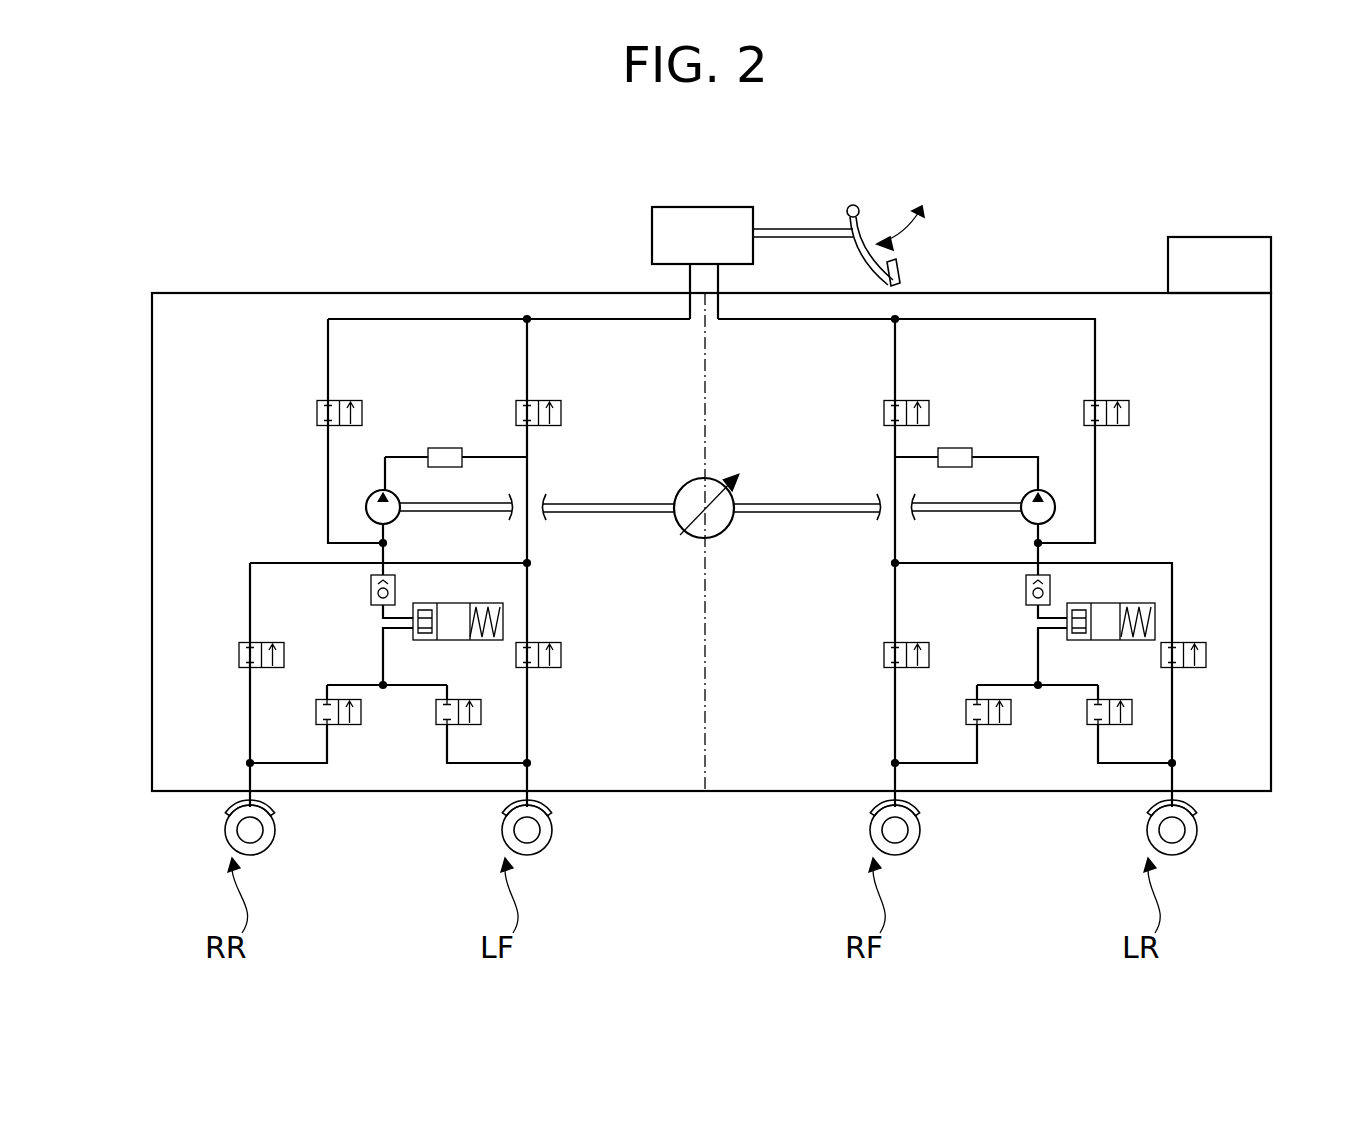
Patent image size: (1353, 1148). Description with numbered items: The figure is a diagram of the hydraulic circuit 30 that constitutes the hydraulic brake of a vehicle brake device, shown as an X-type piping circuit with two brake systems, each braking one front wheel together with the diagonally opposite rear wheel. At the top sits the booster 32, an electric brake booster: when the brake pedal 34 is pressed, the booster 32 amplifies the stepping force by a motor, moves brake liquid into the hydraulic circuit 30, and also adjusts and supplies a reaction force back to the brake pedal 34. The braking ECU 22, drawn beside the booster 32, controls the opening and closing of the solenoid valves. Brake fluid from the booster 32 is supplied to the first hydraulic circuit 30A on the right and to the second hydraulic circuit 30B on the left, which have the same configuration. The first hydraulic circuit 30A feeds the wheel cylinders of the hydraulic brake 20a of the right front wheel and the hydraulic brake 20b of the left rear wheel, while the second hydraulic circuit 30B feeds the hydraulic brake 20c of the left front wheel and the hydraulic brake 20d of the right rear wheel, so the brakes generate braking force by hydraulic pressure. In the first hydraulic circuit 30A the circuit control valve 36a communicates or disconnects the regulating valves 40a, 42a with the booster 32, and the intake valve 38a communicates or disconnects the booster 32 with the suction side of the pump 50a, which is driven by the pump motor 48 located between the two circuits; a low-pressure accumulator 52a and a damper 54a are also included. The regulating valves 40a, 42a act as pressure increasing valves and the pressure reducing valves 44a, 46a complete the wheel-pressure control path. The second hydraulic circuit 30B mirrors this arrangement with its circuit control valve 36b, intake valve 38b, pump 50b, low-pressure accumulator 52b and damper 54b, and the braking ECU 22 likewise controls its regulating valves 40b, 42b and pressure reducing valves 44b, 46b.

The hydraulic brake 20a is at (871, 805).
The hydraulic brake 20b is at (1148, 805).
The hydraulic brake 20c is at (503, 805).
The hydraulic brake 20d is at (226, 805).
The braking ECU 22 is at (1232, 237).
The hydraulic circuit 30 is at (603, 250).
The first hydraulic circuit 30A is at (992, 300).
The second hydraulic circuit 30B is at (388, 302).
The booster 32 is at (722, 207).
The brake pedal 34 is at (870, 225).
The circuit control valve 36a is at (884, 413).
The circuit control valve 36b is at (516, 404).
The intake valve 38a is at (1083, 413).
The intake valve 38b is at (316, 413).
The regulating valve 40a is at (884, 655).
The regulating valve 40b is at (561, 655).
The regulating valve 42a is at (1185, 642).
The regulating valve 42b is at (250, 642).
The pressure reducing valve 44a is at (980, 727).
The pressure reducing valve 44b is at (490, 673).
The pressure reducing valve 46a is at (1138, 673).
The pressure reducing valve 46b is at (340, 727).
The pump motor 48 is at (686, 480).
The pump 50a is at (1055, 507).
The pump 50b is at (366, 507).
The low-pressure accumulator 52a is at (1092, 602).
The low-pressure accumulator 52b is at (428, 602).
The damper 54a is at (957, 448).
The damper 54b is at (442, 448).